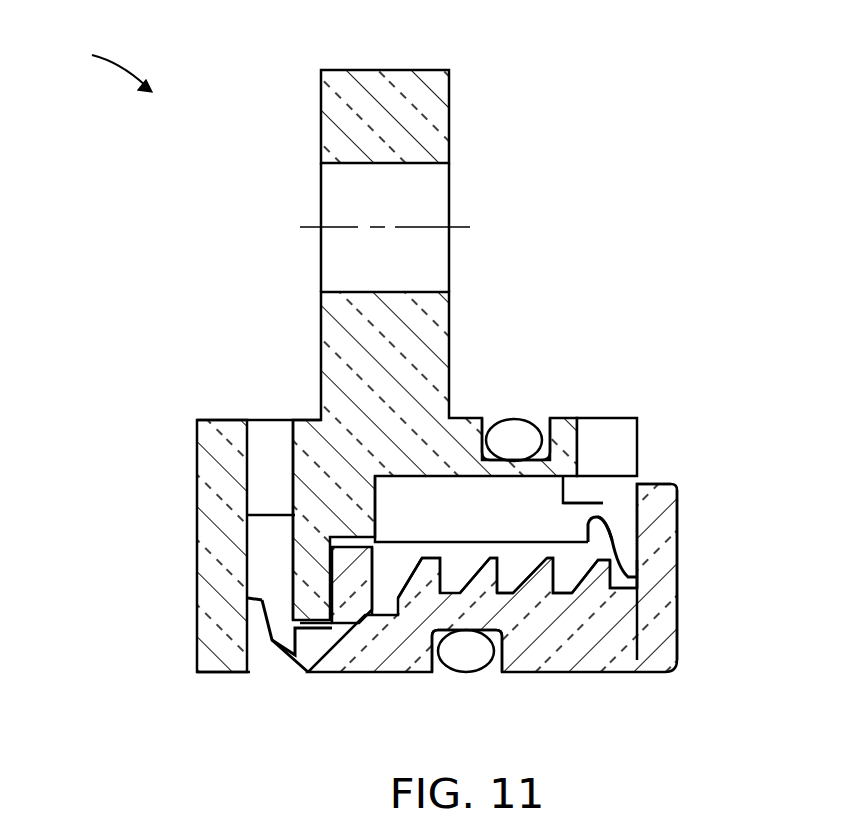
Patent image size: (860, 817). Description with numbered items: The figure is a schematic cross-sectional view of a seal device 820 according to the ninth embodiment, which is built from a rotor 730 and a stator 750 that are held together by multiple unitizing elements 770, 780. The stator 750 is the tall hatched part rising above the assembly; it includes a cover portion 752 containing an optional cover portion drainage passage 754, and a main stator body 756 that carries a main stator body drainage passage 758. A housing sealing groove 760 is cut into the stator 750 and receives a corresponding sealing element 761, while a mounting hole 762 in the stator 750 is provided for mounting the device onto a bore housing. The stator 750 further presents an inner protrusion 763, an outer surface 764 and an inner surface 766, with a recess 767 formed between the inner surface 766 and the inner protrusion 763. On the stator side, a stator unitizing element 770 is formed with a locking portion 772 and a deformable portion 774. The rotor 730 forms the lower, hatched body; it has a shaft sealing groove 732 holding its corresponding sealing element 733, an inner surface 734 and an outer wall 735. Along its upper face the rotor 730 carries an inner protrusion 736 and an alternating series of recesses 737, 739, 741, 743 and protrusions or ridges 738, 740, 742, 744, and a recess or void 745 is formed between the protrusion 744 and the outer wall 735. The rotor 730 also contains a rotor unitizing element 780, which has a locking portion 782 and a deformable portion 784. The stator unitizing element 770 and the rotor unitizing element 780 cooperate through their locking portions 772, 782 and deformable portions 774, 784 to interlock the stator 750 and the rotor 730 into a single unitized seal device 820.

The seal device 820 is at (35, 64).
The rotor 730 is at (540, 592).
The shaft sealing groove 732 is at (490, 650).
The sealing element 733 is at (467, 660).
The inner surface 734 is at (637, 563).
The outer wall 735 is at (667, 548).
The inner protrusion 736 is at (355, 585).
The recess 737 is at (388, 600).
The protrusion or ridge 738 is at (422, 580).
The recess 739 is at (455, 578).
The protrusion or ridge 740 is at (488, 557).
The recess 741 is at (517, 573).
The protrusion or ridge 742 is at (572, 592).
The recess 743 is at (600, 592).
The protrusion or ridge 744 is at (615, 612).
The recess or void 745 is at (625, 585).
The stator 750 is at (385, 338).
The cover portion 752 is at (213, 465).
The cover portion drainage passage 754 is at (258, 453).
The main stator body 756 is at (385, 425).
The main stator body drainage passage 758 is at (613, 442).
The housing sealing groove 760 is at (548, 430).
The sealing element 761 is at (517, 433).
The mounting hole 762 is at (428, 198).
The inner protrusion 763 is at (298, 585).
The outer surface 764 is at (203, 530).
The inner surface 766 is at (255, 580).
The recess 767 is at (258, 602).
The stator unitizing element 770 is at (612, 548).
The locking portion 772 is at (652, 548).
The deformable portion 774 is at (622, 512).
The rotor unitizing element 780 is at (265, 653).
The locking portion 782 is at (250, 645).
The deformable portion 784 is at (283, 660).